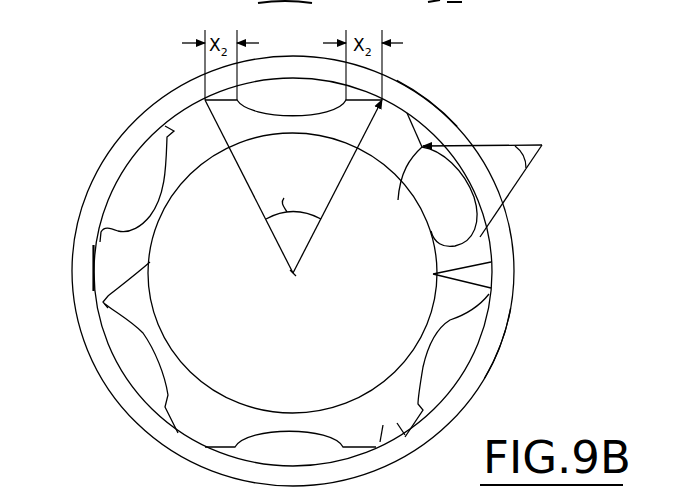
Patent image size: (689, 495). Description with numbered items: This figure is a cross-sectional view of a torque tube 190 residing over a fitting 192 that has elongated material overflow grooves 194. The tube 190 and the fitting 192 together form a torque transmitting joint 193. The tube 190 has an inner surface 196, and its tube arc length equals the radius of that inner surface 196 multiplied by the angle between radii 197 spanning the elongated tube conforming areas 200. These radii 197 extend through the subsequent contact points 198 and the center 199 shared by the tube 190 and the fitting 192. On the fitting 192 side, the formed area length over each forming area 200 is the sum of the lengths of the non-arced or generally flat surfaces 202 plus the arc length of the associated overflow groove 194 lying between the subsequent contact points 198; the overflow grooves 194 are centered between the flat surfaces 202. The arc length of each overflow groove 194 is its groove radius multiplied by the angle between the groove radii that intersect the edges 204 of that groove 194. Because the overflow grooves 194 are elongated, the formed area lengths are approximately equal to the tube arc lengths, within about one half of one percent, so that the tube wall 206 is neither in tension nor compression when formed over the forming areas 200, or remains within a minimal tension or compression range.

The torque tube 190 is at (150, 112).
The fitting 192 is at (173, 347).
The torque transmitting joint 193 is at (441, 94).
The elongated material overflow grooves 194 is at (298, 430).
The inner surface 196 is at (122, 367).
The radii 197 is at (242, 168).
The contact points 198 is at (433, 274).
The center 199 is at (295, 274).
The elongated tube conforming areas 200 is at (135, 197).
The flat surfaces 202 is at (168, 137).
The edges 204 is at (433, 243).
The tube wall 206 is at (490, 348).